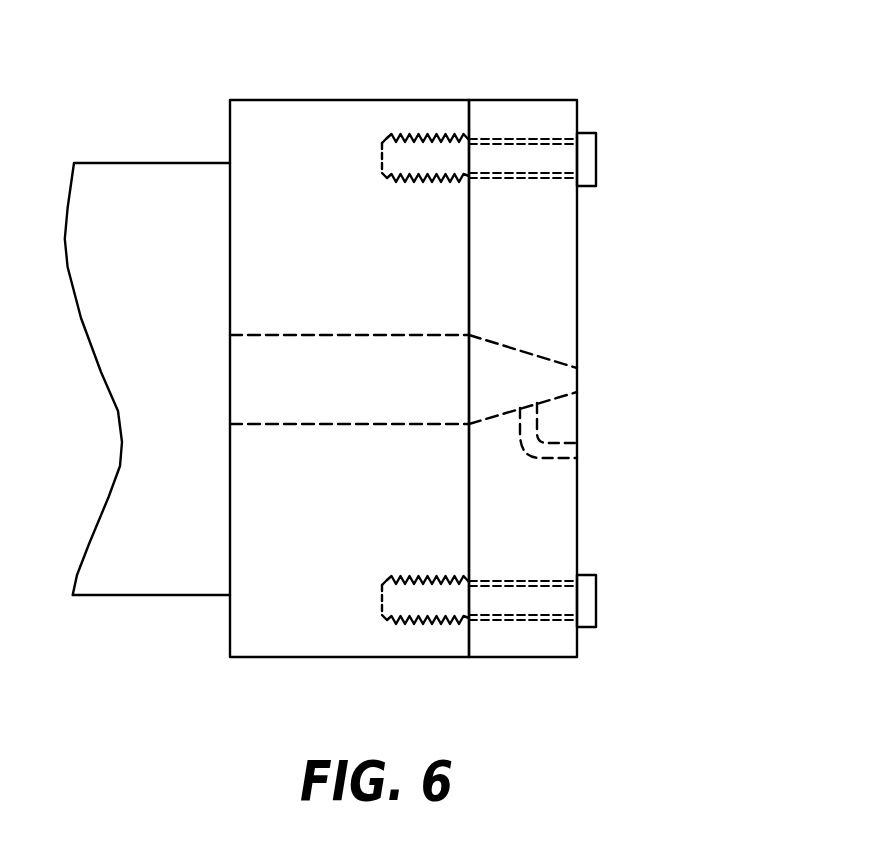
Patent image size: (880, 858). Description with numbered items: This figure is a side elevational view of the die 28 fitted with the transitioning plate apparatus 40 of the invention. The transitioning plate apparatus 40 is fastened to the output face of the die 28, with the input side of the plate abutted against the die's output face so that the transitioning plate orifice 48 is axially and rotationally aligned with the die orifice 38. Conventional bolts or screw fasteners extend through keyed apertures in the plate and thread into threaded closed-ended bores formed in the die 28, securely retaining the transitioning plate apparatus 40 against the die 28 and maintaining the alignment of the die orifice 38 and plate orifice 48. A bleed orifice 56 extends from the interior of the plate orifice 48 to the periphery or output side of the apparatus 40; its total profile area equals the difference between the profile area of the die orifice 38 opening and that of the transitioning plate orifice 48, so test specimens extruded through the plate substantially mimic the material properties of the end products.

The die 28 is at (348, 92).
The die orifice 38 is at (414, 343).
The transitioning plate apparatus 40 is at (545, 100).
The transitioning plate orifice 48 is at (533, 352).
The bleed orifice 56 is at (567, 456).